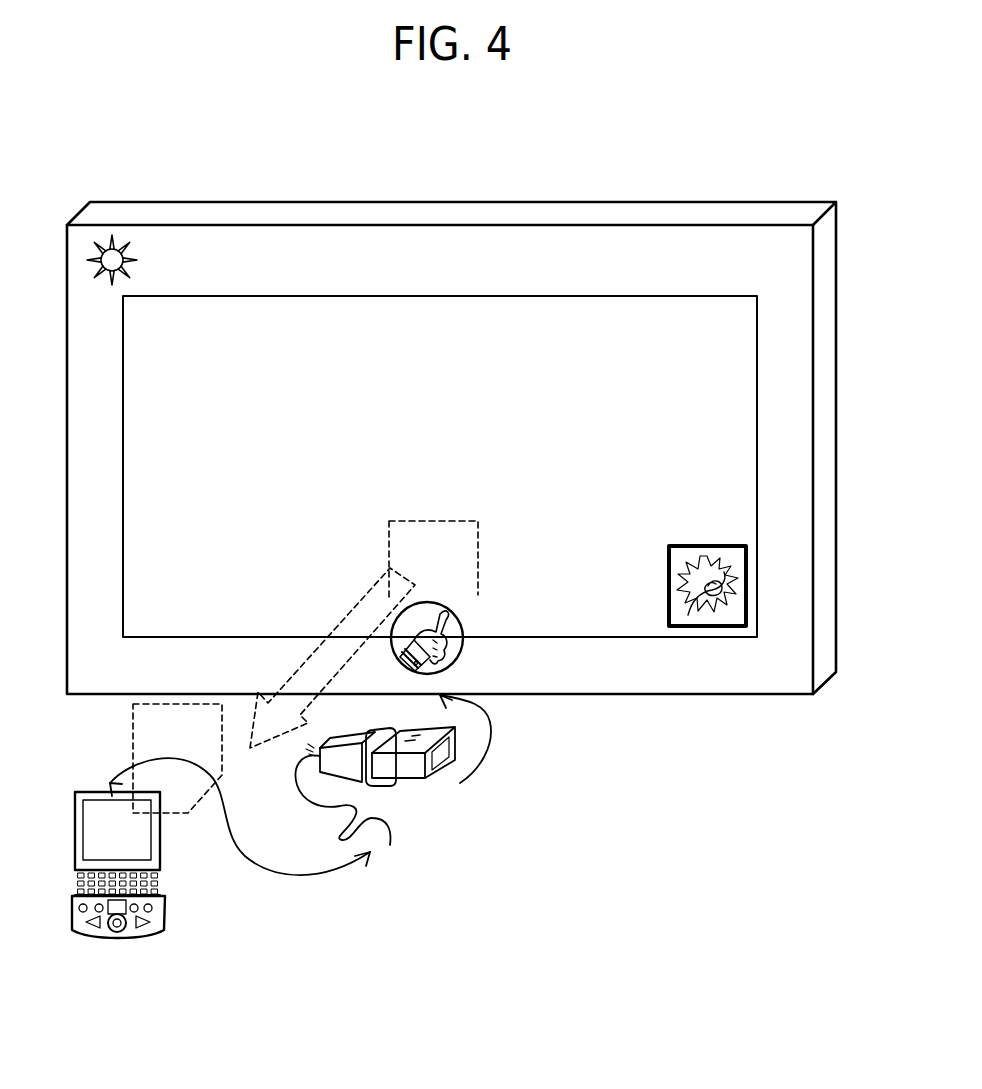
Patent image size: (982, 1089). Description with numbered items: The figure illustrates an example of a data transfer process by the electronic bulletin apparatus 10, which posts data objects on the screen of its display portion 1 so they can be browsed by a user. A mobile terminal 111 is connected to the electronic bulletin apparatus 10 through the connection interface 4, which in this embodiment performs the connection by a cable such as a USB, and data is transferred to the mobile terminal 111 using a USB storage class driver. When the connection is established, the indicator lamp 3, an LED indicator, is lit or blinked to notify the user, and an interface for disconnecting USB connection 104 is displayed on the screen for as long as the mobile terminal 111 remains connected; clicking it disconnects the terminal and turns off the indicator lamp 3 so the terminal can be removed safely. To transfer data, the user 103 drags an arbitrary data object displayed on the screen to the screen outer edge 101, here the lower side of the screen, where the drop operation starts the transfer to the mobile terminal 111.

The electronic bulletin apparatus 10 is at (632, 160).
The display portion 1 is at (737, 378).
The screen outer edge 101 is at (757, 508).
The indicator lamp 3 is at (105, 261).
The user 103 is at (462, 626).
The interface for disconnecting USB connection 104 is at (703, 545).
The connection interface 4 is at (410, 782).
The mobile terminal 111 is at (166, 905).